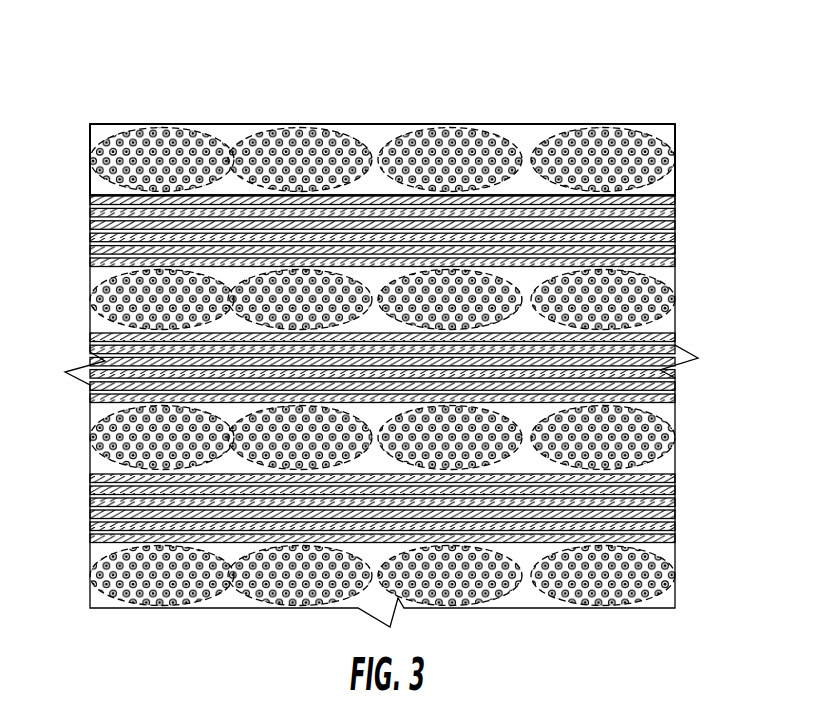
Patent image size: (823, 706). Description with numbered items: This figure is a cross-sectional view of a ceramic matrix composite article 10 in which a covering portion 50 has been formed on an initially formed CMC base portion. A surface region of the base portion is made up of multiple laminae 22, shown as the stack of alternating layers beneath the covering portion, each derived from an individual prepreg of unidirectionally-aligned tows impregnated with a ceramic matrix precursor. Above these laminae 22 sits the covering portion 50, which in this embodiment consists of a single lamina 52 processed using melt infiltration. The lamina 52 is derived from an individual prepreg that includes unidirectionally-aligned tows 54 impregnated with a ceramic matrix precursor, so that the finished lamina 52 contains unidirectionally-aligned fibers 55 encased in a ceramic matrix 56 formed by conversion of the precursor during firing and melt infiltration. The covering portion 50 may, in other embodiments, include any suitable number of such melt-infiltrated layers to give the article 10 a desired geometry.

The CMC article 10 is at (662, 59).
The laminae 22 is at (707, 203).
The covering portion 50 is at (80, 127).
The lamina 52 is at (703, 127).
The unidirectionally-aligned tows 54 is at (550, 137).
The unidirectionally-aligned fibers 55 is at (273, 152).
The ceramic matrix 56 is at (380, 133).